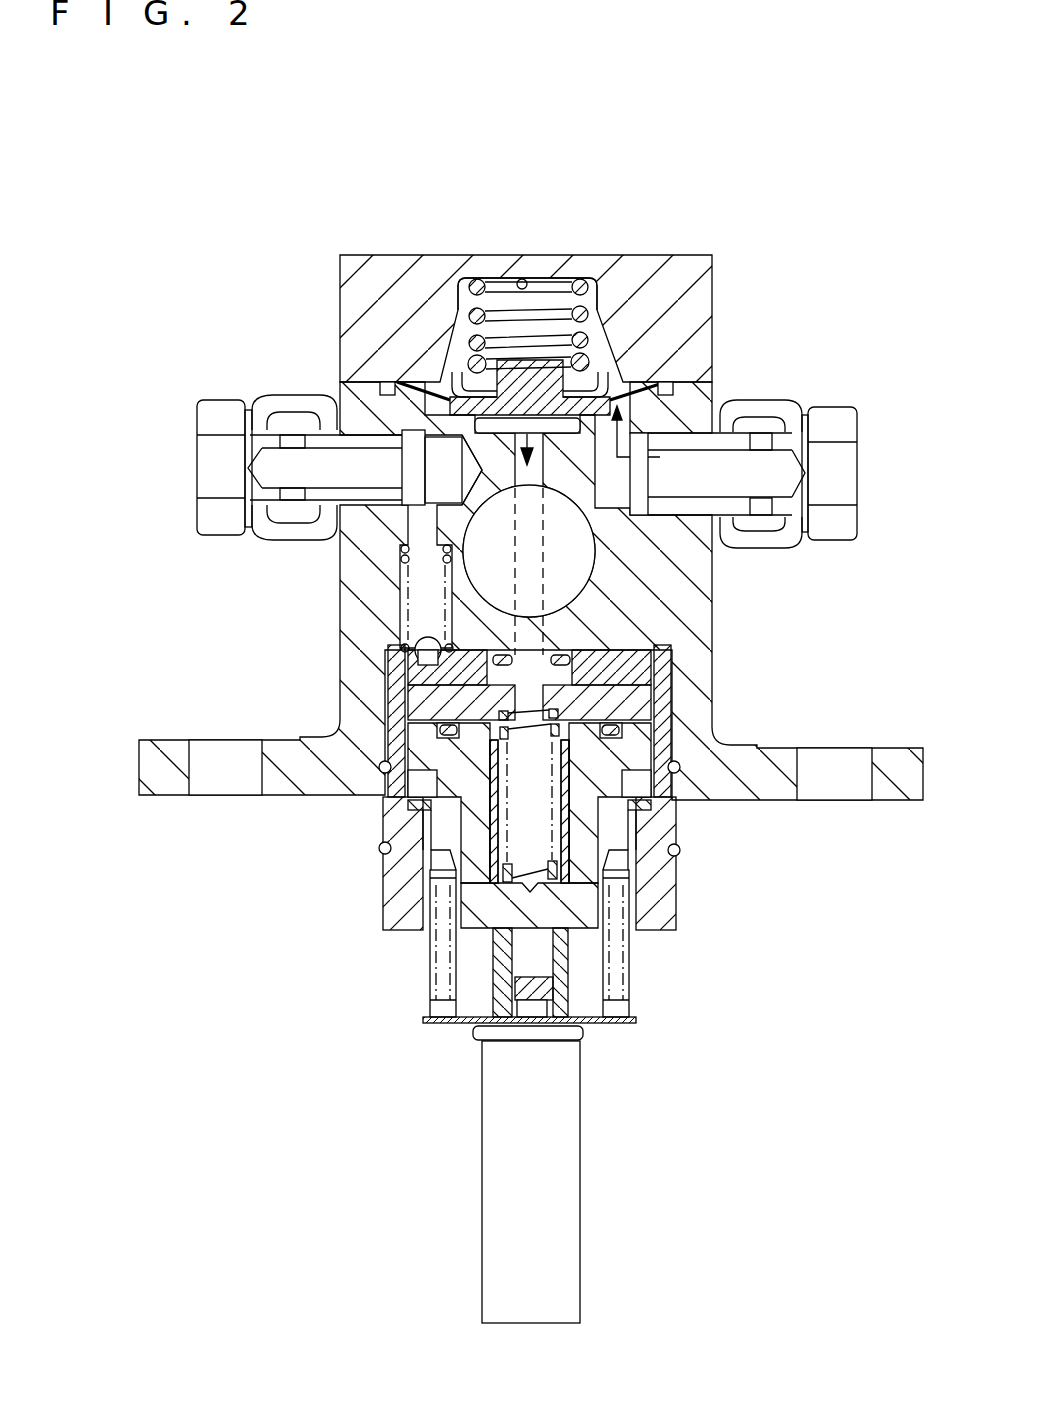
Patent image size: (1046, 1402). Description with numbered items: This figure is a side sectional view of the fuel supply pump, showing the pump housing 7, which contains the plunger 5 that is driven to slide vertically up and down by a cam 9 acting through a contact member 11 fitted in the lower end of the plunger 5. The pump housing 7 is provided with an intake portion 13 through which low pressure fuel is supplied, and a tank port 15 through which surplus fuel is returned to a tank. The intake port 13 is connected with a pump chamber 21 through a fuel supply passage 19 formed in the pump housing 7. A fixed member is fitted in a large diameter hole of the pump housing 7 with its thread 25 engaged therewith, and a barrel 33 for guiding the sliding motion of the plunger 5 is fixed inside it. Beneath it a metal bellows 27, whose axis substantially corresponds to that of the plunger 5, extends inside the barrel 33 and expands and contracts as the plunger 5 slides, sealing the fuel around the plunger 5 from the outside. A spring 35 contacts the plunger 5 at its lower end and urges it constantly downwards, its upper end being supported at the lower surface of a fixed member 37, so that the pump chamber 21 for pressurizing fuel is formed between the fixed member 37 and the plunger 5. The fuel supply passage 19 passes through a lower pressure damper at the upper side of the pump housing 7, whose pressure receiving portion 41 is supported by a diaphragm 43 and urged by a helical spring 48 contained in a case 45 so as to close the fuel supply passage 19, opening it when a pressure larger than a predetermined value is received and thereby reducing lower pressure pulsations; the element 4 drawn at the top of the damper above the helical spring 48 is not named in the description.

The spring 4 is at (527, 281).
The plunger 5 is at (568, 960).
The pump housing 7 is at (705, 637).
The cam 9 is at (573, 1116).
The contact member 11 is at (477, 1033).
The intake portion 13 is at (850, 470).
The tank port 15 is at (286, 540).
The fuel supply passage 19 is at (537, 463).
The pump chamber 21 is at (678, 730).
The thread 25 is at (398, 678).
The bellows 27 is at (430, 993).
The barrel 33 is at (490, 810).
The spring 35 is at (395, 880).
The fixed member 37 is at (405, 713).
The pressure receiving portion 41 is at (637, 387).
The diaphragm 43 is at (432, 381).
The case 45 is at (395, 262).
The helical spring 48 is at (470, 318).